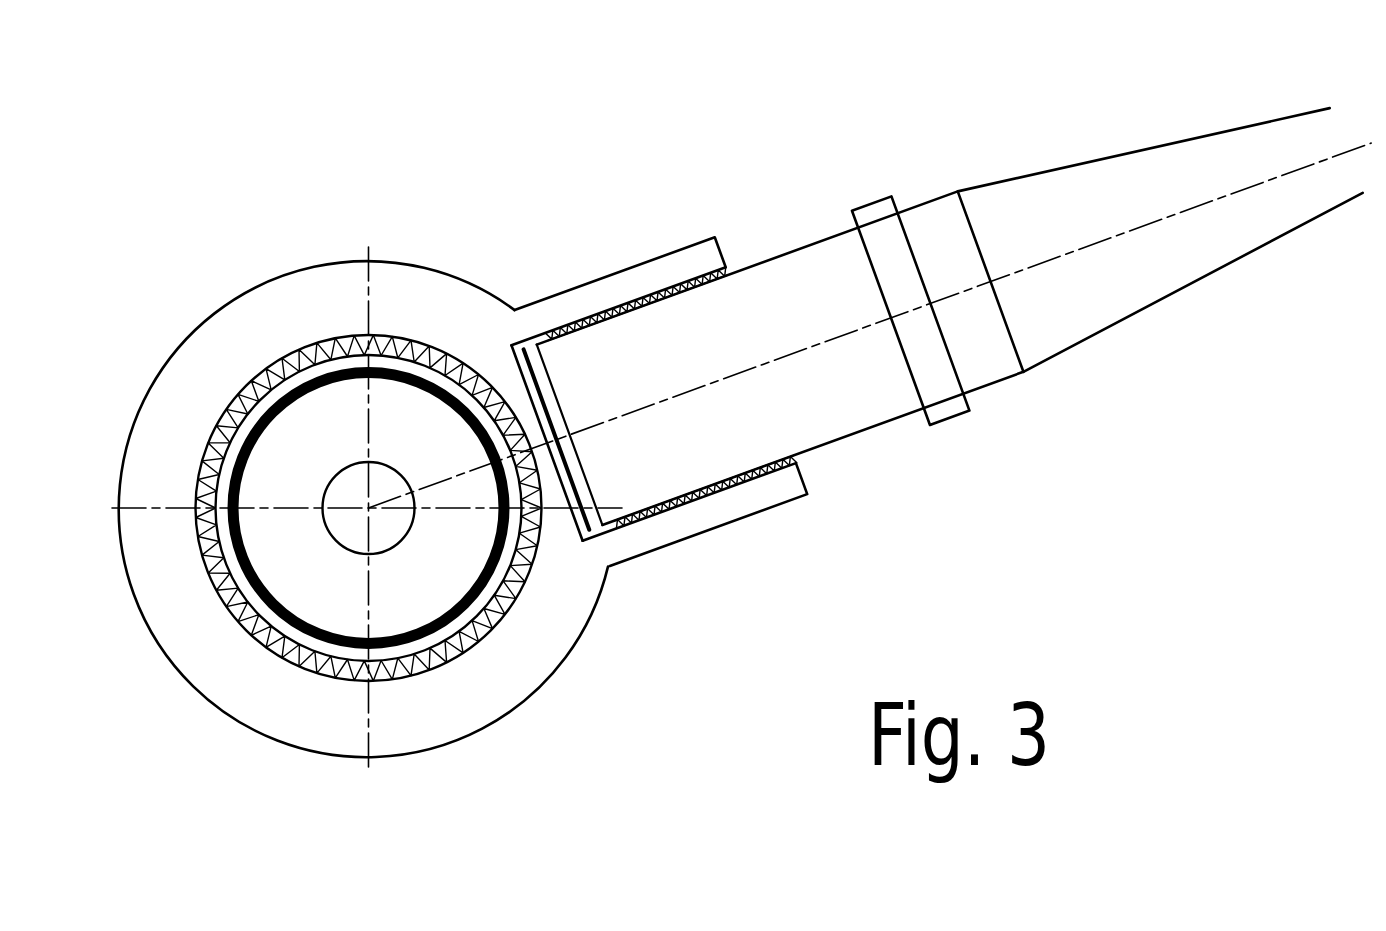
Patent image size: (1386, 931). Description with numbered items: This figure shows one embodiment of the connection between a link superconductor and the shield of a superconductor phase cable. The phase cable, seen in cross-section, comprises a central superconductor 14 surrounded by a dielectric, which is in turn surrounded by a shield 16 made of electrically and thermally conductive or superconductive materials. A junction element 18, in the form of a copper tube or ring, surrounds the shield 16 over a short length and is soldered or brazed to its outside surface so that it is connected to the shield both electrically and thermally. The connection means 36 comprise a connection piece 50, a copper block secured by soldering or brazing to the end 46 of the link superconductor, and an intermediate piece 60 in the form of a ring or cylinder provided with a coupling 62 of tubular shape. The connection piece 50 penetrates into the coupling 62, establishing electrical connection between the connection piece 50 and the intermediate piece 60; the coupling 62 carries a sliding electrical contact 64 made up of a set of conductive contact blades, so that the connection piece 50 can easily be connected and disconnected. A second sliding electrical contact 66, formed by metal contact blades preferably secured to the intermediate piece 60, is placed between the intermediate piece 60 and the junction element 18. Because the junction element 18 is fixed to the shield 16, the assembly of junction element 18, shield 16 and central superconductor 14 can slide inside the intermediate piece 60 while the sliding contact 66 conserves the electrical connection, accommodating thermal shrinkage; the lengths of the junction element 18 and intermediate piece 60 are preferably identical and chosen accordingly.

The central superconductor 14 is at (370, 483).
The shield 16 is at (293, 630).
The junction element 18 is at (243, 423).
The connection means 36 is at (679, 359).
The end of the link superconductor 46 is at (1140, 273).
The connection piece 50 is at (845, 393).
The intermediate piece 60 is at (482, 330).
The coupling 62 is at (765, 492).
The sliding electrical contact 64 is at (670, 287).
The sliding electrical contact 66 is at (487, 637).